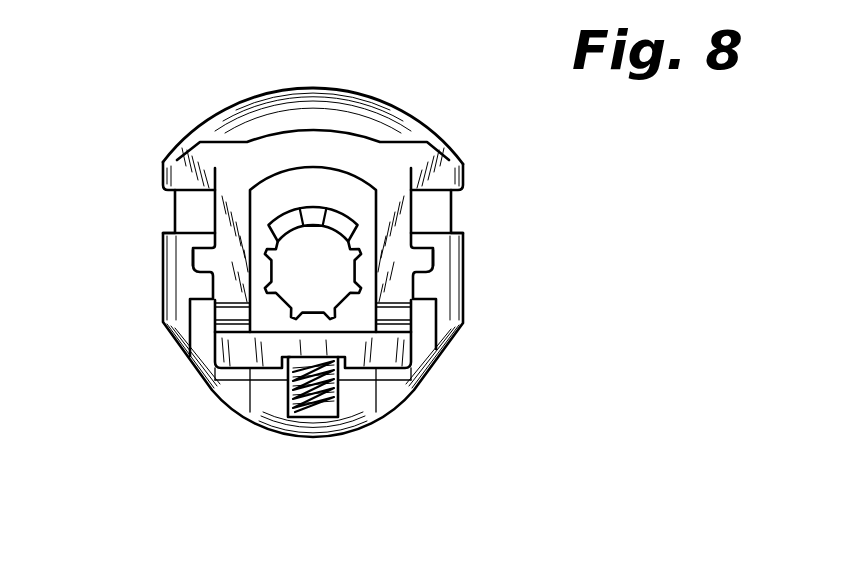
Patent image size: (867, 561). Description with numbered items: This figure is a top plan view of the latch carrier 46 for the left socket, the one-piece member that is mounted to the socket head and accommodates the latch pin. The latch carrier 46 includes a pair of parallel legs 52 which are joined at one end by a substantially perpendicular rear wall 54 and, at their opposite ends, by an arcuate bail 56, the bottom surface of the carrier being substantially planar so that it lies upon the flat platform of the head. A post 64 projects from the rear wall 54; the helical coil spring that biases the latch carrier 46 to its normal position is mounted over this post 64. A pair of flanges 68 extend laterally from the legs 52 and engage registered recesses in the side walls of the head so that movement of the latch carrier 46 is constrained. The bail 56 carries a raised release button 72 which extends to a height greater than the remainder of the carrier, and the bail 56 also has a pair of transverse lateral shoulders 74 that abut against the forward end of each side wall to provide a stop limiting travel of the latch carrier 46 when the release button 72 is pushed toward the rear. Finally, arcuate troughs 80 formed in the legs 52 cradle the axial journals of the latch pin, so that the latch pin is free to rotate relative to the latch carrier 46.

The latch carrier 46 is at (150, 212).
The legs 52 is at (213, 217).
The rear wall 54 is at (368, 344).
The arcuate bail 56 is at (264, 143).
The post 64 is at (333, 406).
The flanges 68 is at (190, 268).
The release button 72 is at (344, 106).
The transverse lateral shoulders 74 is at (165, 192).
The arcuate troughs 80 is at (215, 327).